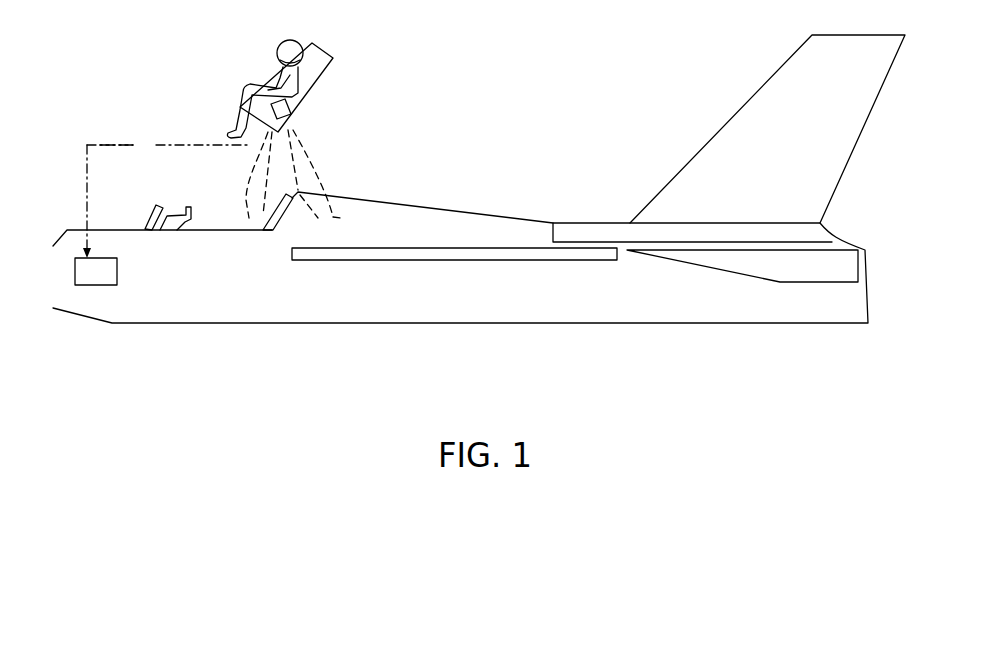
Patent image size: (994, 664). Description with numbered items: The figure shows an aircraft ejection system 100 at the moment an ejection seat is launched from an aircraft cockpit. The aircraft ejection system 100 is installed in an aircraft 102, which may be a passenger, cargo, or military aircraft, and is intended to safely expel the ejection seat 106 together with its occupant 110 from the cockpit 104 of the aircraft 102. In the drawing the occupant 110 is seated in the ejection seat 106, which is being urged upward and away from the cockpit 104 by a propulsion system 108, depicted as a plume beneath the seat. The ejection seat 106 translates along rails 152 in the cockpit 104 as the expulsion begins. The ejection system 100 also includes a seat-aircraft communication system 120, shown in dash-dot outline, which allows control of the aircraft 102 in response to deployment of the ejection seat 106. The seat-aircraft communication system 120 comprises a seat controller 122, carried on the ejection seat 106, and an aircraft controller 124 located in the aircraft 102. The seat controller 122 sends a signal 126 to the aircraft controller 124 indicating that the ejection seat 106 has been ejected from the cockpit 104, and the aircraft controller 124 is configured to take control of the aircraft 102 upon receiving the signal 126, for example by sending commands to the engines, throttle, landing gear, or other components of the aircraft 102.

The aircraft ejection system 100 is at (418, 106).
The aircraft 102 is at (496, 296).
The cockpit 104 is at (208, 218).
The ejection seat 106 is at (320, 65).
The propulsion system 108 is at (305, 153).
The occupant 110 is at (282, 43).
The seat-aircraft communication system 120 is at (104, 126).
The seat controller 122 is at (288, 110).
The aircraft controller 124 is at (100, 277).
The signal 126 is at (127, 145).
The rails 152 is at (280, 217).